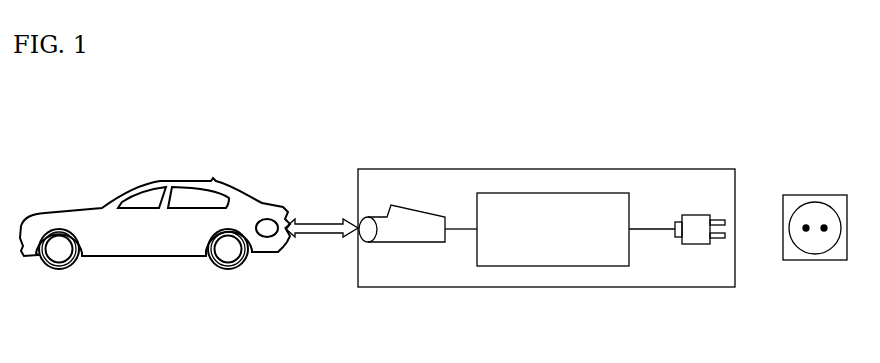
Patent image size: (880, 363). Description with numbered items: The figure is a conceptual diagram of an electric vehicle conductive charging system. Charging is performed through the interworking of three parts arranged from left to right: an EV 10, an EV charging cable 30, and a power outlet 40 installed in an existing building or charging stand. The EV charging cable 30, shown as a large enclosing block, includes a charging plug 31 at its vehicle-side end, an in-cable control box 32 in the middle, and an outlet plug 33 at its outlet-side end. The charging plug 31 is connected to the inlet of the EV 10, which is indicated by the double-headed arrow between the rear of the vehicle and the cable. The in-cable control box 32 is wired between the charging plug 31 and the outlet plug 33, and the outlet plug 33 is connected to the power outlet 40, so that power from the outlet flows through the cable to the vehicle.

The EV 10 is at (174, 181).
The EV charging cable 30 is at (545, 169).
The charging plug 31 is at (390, 205).
The in-cable control box 32 is at (553, 266).
The outlet plug 33 is at (694, 215).
The power outlet 40 is at (812, 195).